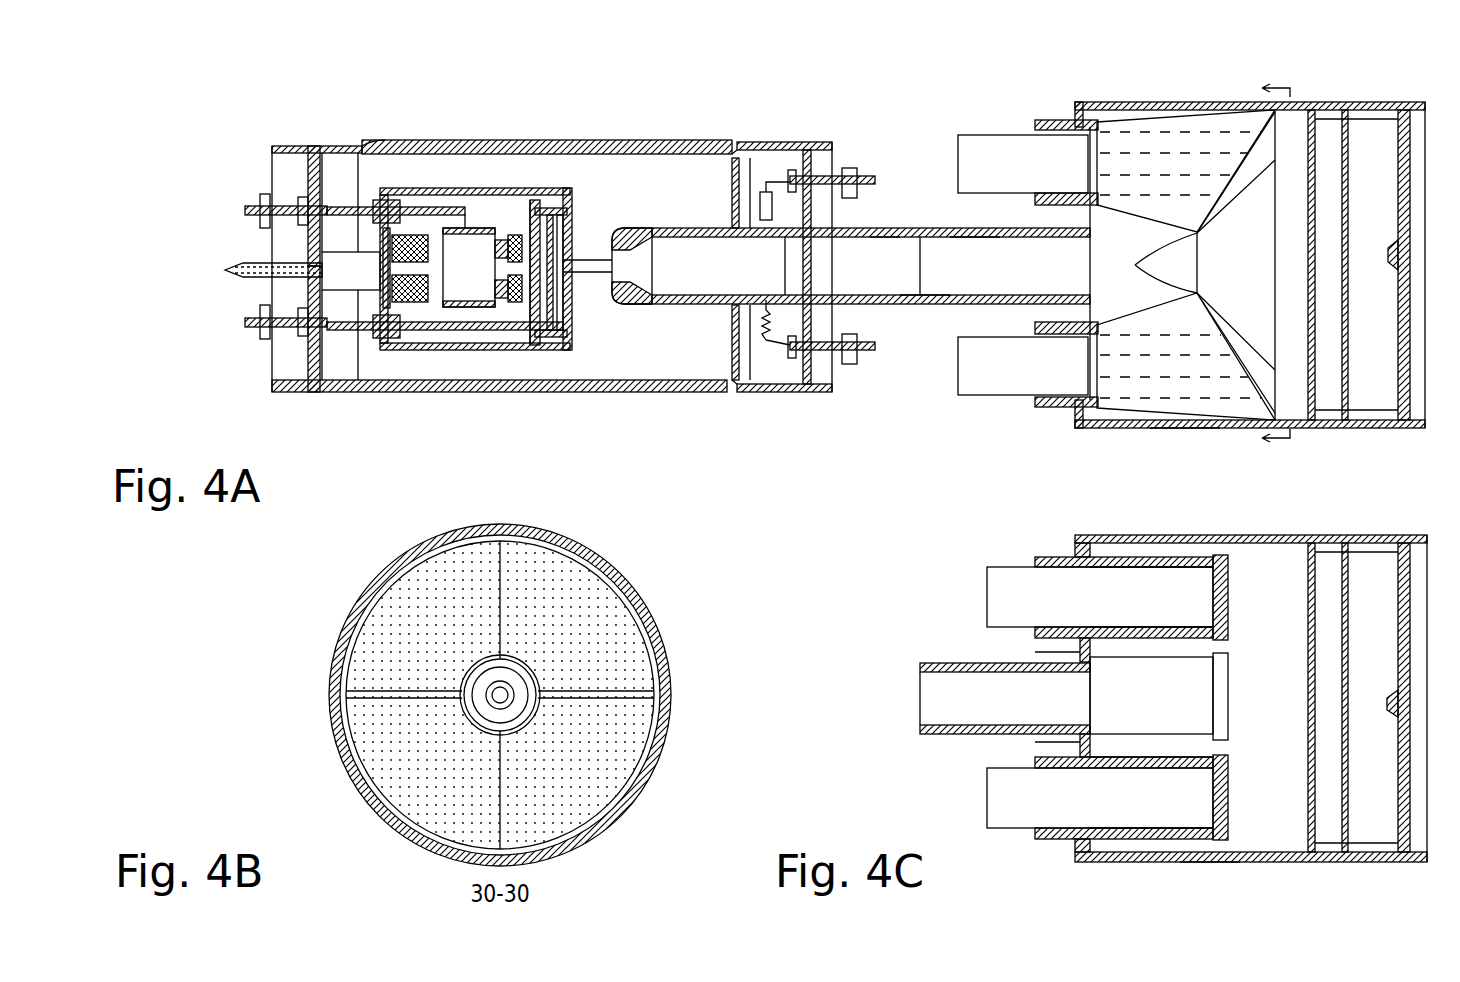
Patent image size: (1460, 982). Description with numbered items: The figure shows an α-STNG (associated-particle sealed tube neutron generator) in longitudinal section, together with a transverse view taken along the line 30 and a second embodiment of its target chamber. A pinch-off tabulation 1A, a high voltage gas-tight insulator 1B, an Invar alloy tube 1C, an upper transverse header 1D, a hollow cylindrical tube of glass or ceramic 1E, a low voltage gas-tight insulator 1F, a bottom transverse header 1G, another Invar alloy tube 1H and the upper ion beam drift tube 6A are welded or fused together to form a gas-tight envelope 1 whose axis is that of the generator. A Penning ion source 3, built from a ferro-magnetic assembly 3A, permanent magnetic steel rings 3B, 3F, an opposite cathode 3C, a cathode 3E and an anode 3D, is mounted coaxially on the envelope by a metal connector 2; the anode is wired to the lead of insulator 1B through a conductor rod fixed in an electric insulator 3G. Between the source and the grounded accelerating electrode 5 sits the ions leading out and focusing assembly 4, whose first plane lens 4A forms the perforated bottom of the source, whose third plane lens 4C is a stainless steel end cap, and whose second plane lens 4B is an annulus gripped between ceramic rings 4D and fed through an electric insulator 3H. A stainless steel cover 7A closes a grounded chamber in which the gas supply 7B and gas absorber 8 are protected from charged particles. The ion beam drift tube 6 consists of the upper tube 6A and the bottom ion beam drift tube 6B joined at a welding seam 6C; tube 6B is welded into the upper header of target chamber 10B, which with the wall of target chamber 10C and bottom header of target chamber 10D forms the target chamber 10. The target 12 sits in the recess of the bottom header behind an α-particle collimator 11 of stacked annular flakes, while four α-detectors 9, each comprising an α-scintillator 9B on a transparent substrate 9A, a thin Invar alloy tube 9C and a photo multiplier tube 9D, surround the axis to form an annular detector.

In FIG. 4A, the gas-tight envelope 1 is at (658, 135).
In FIG. 4A, the pinch-off tabulation 1A is at (232, 268).
In FIG. 4A, the high voltage gas-tight insulator 1B is at (262, 322).
In FIG. 4A, the Invar alloy tube 1C is at (275, 147).
In FIG. 4A, the upper transverse header 1D is at (310, 370).
In FIG. 4A, the hollow cylindrical tube of glass or ceramic 1E is at (372, 143).
In FIG. 4A, the low voltage gas-tight insulator 1F is at (850, 172).
In FIG. 4A, the bottom transverse header 1G is at (808, 386).
In FIG. 4A, the Invar alloy tube 1H is at (740, 150).
In FIG. 4A, the metal connector 2 is at (351, 271).
In FIG. 4A, the Penning ion source 3 is at (469, 267).
In FIG. 4A, the ferro-magnetic assembly 3A is at (382, 340).
In FIG. 4A, the permanent magnetic steel ring (SmCo5) 3B is at (412, 295).
In FIG. 4A, the opposite cathode 3C is at (440, 190).
In FIG. 4A, the anode 3D is at (462, 307).
In FIG. 4A, the cathode 3E is at (512, 232).
In FIG. 4A, the permanent magnetic steel ring (SmCo5) 3F is at (514, 302).
In FIG. 4A, the electric insulator 3G is at (386, 200).
In FIG. 4A, the electric insulator 3H is at (345, 388).
In FIG. 4A, the ions leading out and focusing assembly 4 is at (557, 272).
In FIG. 4A, the first plane lens 4A is at (536, 200).
In FIG. 4A, the second plane lens 4B is at (562, 332).
In FIG. 4A, the third plane lens 4C is at (570, 250).
In FIG. 4B, the third plane lens 4C is at (510, 688).
In FIG. 4A, the ceramic rings 4D is at (550, 332).
In FIG. 4A, the accelerating electrode 5 is at (632, 302).
In FIG. 4B, the accelerating electrode 5 is at (513, 704).
In FIG. 4A, the ion beam drift tube 6 is at (871, 266).
In FIG. 4A, the upper ion beam drift tube 6A is at (892, 230).
In FIG. 4A, the bottom ion beam drift tube 6B is at (958, 230).
In FIG. 4C, the bottom ion beam drift tube 6B is at (976, 668).
In FIG. 4A, the welding seam 6C is at (920, 292).
In FIG. 4A, the stainless steel cover 7A is at (735, 340).
In FIG. 4A, the gas supply 7B is at (752, 340).
In FIG. 4A, the gas absorber 8 is at (766, 192).
In FIG. 4A, the α-detector 9 is at (1222, 263).
In FIG. 4C, the α-detector 9 is at (1170, 696).
In FIG. 4A, the transparent substrate for α-scintillator 9A is at (1155, 135).
In FIG. 4C, the transparent substrate for α-scintillator 9A is at (1210, 590).
In FIG. 4A, the α-scintillator 9B is at (1265, 148).
In FIG. 4B, the α-scintillator 9B is at (595, 607).
In FIG. 4C, the α-scintillator 9B is at (1222, 590).
In FIG. 4A, the thin Invar alloy tube 9C is at (1045, 405).
In FIG. 4C, the thin Invar alloy tube 9C is at (1133, 563).
In FIG. 4A, the photo multiplier tube 9D is at (985, 395).
In FIG. 4C, the photo multiplier tube 9D is at (1020, 800).
In FIG. 4A, the target chamber 10 is at (1225, 95).
In FIG. 4C, the target chamber 10 is at (1328, 535).
In FIG. 4A, the upper header of target chamber 10B is at (1060, 122).
In FIG. 4B, the upper header of target chamber 10B is at (470, 674).
In FIG. 4C, the upper header of target chamber 10B is at (1065, 558).
In FIG. 4A, the wall of target chamber 10C is at (1182, 428).
In FIG. 4B, the wall of target chamber 10C is at (375, 583).
In FIG. 4C, the wall of target chamber 10C is at (1205, 860).
In FIG. 4A, the bottom header of target chamber 10D is at (1404, 400).
In FIG. 4C, the bottom header of target chamber 10D is at (1403, 850).
In FIG. 4A, the α-particle collimator 11 is at (1346, 160).
In FIG. 4C, the α-particle collimator 11 is at (1346, 580).
In FIG. 4A, the target 12 is at (1345, 420).
In FIG. 4C, the target 12 is at (1348, 845).
In FIG. 4A, the section line 30— 30 is at (1270, 265).